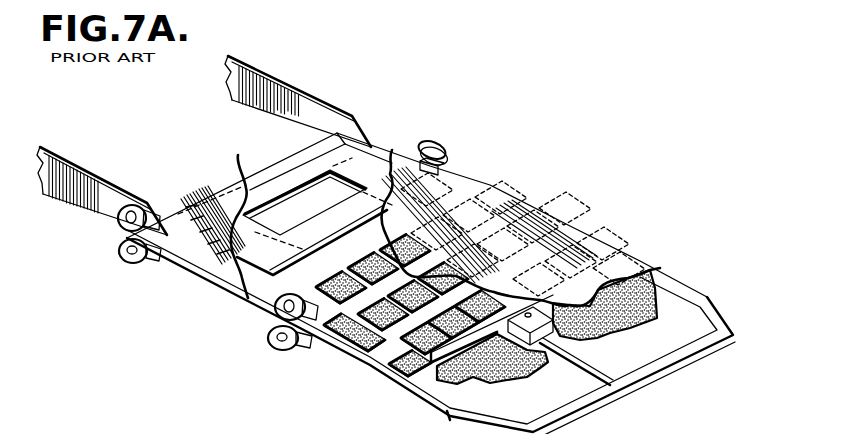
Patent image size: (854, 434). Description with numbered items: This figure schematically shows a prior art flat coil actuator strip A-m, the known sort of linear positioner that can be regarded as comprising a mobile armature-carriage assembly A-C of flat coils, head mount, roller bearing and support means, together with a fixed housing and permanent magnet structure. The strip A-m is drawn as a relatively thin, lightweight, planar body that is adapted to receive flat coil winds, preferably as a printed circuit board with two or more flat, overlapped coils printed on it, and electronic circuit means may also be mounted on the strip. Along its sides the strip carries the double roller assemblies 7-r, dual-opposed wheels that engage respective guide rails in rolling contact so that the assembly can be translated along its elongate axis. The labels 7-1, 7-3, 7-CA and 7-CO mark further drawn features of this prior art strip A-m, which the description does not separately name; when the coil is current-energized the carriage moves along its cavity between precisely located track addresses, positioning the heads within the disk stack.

The substrate board 7-1 is at (678, 370).
The hold-down guide plate 7-3 is at (236, 77).
The roller 7-r is at (440, 143).
The cover sheet A 7-CA is at (277, 180).
The cover film 7-CO is at (535, 243).
The actuator strip A-m is at (690, 292).
The mobile armature-carriage assembly A-C is at (247, 300).